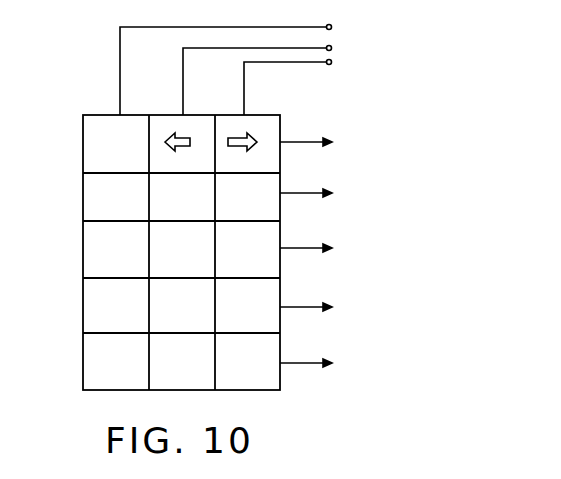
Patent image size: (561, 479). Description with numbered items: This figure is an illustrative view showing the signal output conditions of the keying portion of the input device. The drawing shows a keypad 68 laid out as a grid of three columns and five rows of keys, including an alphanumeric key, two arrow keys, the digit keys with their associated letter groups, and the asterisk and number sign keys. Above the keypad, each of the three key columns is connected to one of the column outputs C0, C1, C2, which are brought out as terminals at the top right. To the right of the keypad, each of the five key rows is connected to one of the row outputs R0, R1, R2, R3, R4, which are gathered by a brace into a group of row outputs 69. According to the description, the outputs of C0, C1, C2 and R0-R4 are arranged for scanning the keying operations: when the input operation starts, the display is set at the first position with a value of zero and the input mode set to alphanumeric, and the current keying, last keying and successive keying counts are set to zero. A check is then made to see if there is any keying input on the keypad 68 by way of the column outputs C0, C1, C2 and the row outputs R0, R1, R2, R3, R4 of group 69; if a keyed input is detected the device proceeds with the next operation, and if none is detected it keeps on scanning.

The keypad 68 is at (202, 224).
The row scan lines 69 is at (352, 252).
The column output C0 is at (240, 66).
The column output C1 is at (272, 77).
The column output C2 is at (302, 84).
The row output R0 is at (319, 142).
The row output R1 is at (319, 193).
The row output R2 is at (319, 248).
The row output R3 is at (319, 307).
The row output R4 is at (319, 363).